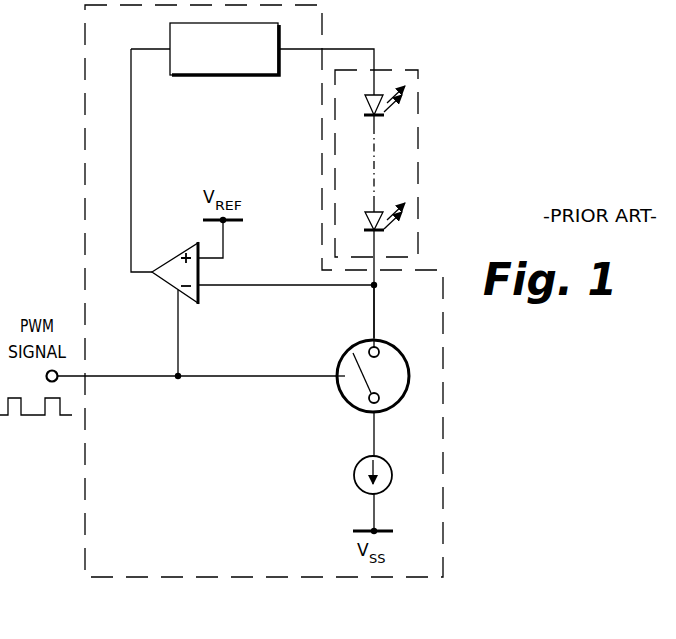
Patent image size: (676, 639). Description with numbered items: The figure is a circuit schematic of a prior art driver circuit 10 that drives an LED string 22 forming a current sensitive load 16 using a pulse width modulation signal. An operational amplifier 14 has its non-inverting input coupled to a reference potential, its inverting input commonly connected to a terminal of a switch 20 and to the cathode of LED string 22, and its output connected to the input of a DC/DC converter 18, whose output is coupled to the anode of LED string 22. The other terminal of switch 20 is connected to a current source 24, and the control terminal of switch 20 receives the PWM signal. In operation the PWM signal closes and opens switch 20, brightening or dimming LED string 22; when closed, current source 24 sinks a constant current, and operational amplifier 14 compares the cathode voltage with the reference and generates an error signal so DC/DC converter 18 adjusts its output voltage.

The driver circuit 10 is at (85, 203).
The operational amplifier 14 is at (178, 255).
The current sensitive load 16 is at (418, 190).
The DC/DC converter 18 is at (213, 78).
The switch 20 is at (343, 398).
The LED string 22 is at (399, 152).
The current source 24 is at (355, 479).